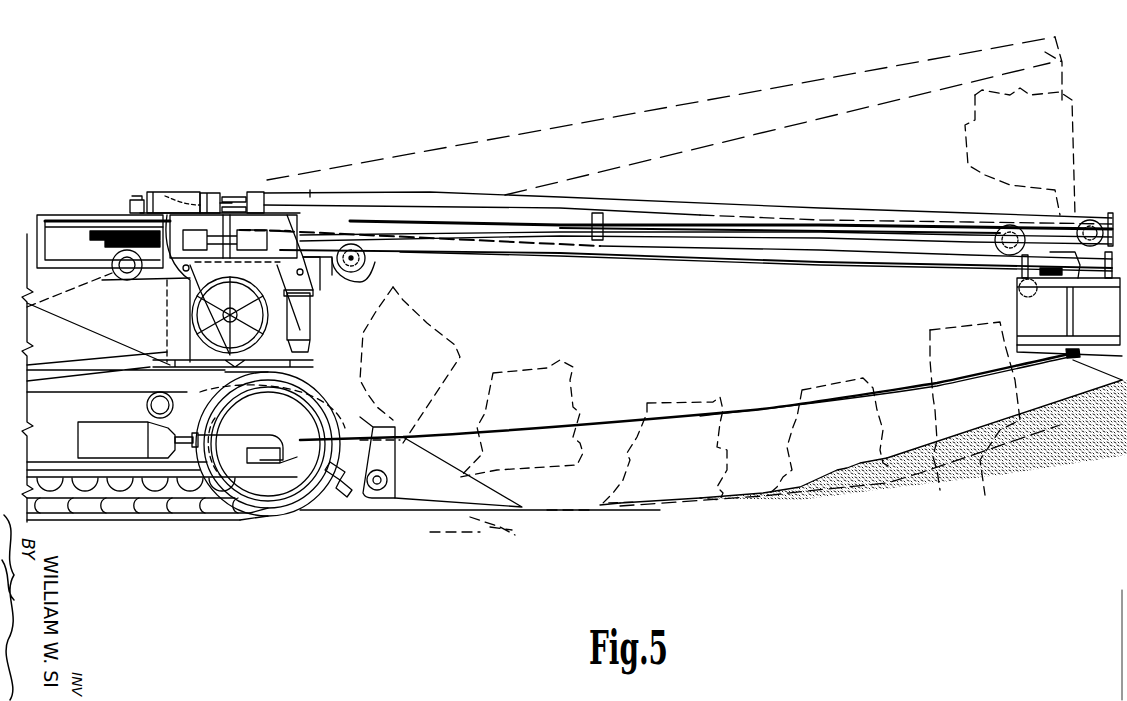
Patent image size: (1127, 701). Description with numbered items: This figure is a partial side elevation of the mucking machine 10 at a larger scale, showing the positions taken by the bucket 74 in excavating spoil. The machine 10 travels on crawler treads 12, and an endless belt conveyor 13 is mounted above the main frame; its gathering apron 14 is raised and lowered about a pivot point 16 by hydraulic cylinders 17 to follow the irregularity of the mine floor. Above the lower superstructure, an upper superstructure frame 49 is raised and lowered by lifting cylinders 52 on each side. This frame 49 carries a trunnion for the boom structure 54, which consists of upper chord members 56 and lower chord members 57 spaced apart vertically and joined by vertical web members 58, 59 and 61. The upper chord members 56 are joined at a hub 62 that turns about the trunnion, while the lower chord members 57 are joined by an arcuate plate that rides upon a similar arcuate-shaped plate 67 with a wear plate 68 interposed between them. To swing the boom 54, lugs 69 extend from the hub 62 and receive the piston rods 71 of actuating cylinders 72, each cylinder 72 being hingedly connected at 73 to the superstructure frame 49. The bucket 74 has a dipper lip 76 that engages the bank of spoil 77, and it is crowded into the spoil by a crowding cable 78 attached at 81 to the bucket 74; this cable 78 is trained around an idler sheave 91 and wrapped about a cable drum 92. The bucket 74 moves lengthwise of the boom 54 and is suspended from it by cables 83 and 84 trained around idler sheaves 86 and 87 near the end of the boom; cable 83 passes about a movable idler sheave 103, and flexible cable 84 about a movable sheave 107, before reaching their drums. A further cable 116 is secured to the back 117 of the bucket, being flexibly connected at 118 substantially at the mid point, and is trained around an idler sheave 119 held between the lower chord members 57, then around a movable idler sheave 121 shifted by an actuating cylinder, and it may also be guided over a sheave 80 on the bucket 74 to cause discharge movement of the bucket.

The mucking machine 10 is at (832, 506).
The crawler treads 12 is at (145, 515).
The endless belt conveyor 13 is at (80, 342).
The gathering apron 14 is at (432, 457).
The pivot point 16 is at (377, 490).
The hydraulic cylinders 17 is at (333, 490).
The upper superstructure frame 49 is at (172, 297).
The lifting cylinders 52 is at (305, 310).
The boom structure 54 is at (630, 108).
The upper chord members 56 is at (433, 193).
The lower chord members 57 is at (446, 254).
The vertical web member 58 is at (352, 223).
The vertical web member 59 is at (613, 217).
The vertical web member 61 is at (1110, 213).
The hub 62 is at (262, 193).
The arcuate-shaped plate 67 is at (320, 262).
The wear plate 68 is at (340, 268).
The lugs 69 is at (235, 198).
The piston rods 71 is at (212, 193).
The actuating cylinders 72 is at (165, 192).
The hinge connection 73 is at (137, 198).
The bucket 74 is at (1026, 142).
The dipper lip 76 is at (1112, 390).
The bank of spoil 77 is at (1072, 472).
The crowding cable 78 is at (755, 409).
The sheave 80 is at (393, 287).
The cable attachment 81 is at (1073, 360).
The cable 83 is at (728, 234).
The flexible cable 84 is at (695, 222).
The idler sheave 86 is at (1000, 252).
The idler sheave 87 is at (1088, 218).
The idler sheave 91 is at (232, 434).
The cable drum 92 is at (300, 354).
The movable idler sheave 103 is at (108, 250).
The movable sheave 107 is at (93, 215).
The cable 116 is at (788, 264).
The back 117 is at (1098, 265).
The connection point 118 is at (1057, 262).
The idler sheave 119 is at (360, 268).
The movable idler sheave 121 is at (102, 280).